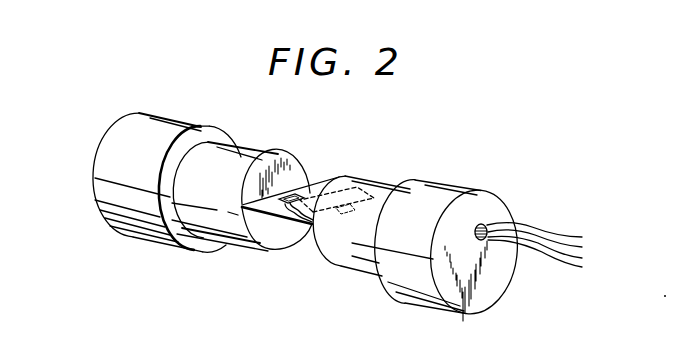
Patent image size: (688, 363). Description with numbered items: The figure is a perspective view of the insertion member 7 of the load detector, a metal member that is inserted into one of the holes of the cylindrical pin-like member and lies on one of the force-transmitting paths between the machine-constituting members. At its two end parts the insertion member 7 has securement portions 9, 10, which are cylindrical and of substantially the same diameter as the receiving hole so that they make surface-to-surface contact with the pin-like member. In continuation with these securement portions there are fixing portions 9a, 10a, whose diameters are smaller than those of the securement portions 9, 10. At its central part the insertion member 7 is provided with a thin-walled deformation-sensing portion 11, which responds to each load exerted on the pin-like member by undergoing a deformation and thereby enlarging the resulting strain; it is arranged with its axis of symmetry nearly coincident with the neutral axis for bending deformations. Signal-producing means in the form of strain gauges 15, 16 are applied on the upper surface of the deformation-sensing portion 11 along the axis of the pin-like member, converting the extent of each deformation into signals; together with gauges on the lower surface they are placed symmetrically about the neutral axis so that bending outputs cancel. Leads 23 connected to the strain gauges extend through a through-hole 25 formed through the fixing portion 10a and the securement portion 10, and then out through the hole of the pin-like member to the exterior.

The insertion member 7 is at (390, 155).
The securement portion 9 is at (175, 118).
The fixing portion 9a is at (250, 142).
The securement portion 10 is at (458, 184).
The fixing portion 10a is at (395, 181).
The deformation-sensing portion 11 is at (310, 187).
The strain gauge 15 is at (288, 192).
The strain gauge 16 is at (345, 192).
The leads 23 is at (565, 236).
The through-hole 25 is at (489, 223).